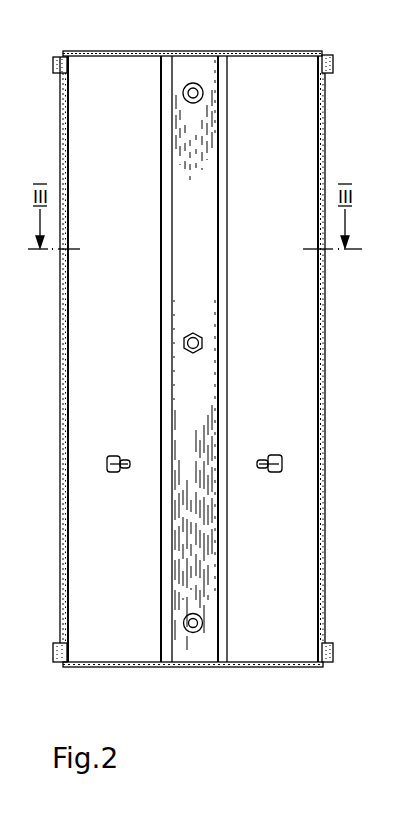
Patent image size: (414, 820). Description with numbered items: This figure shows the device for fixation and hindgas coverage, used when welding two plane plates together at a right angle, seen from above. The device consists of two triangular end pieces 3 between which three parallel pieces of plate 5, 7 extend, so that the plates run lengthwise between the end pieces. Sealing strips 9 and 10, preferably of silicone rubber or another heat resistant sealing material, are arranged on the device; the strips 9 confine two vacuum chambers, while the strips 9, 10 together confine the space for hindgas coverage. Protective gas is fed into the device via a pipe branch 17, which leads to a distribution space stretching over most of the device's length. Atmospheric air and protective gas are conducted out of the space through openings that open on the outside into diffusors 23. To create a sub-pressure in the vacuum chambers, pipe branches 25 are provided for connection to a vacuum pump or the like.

The triangular end piece 3 is at (272, 44).
The piece of plate 5 is at (223, 63).
The piece of plate 7 is at (77, 547).
The sealing strip 9 is at (63, 102).
The sealing strip 10 is at (58, 56).
The pipe branch 17 is at (183, 343).
The diffusor 23 is at (191, 83).
The pipe branch 25 is at (107, 465).